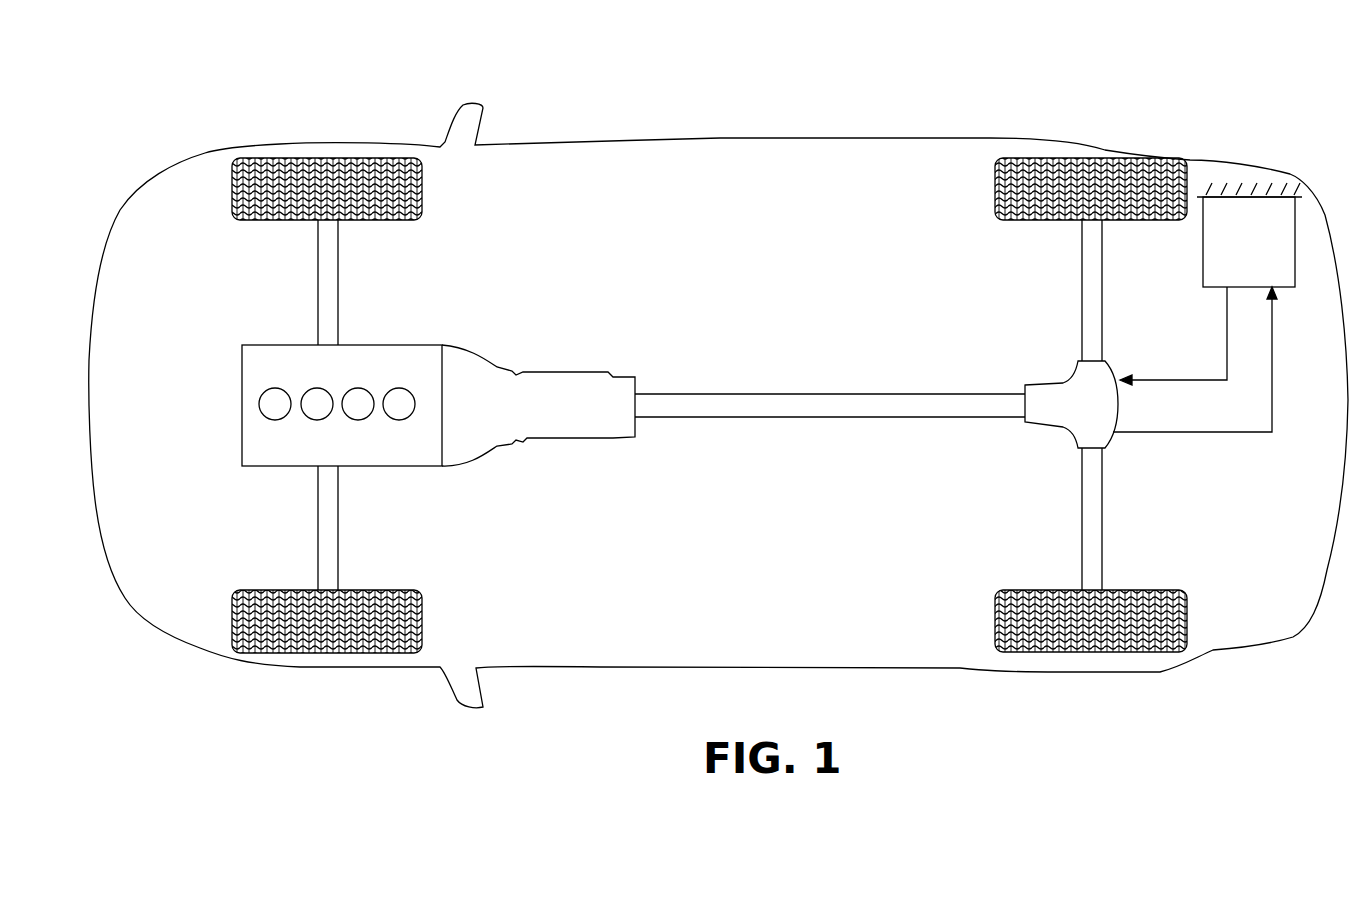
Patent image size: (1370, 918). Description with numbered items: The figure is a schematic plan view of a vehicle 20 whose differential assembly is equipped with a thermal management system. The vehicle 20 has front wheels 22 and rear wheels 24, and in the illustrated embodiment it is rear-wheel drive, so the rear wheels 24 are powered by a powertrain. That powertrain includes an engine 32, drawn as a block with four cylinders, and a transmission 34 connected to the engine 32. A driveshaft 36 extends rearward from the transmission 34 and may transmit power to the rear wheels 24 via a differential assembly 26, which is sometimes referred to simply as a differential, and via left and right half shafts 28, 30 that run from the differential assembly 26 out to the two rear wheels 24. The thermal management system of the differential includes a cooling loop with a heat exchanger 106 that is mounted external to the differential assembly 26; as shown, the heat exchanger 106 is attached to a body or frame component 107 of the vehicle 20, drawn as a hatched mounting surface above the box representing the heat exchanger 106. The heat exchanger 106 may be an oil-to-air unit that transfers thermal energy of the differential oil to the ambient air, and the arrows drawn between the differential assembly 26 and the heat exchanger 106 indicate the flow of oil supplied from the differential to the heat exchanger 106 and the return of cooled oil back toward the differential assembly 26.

The vehicle 20 is at (850, 75).
The front wheels 22 is at (335, 157).
The rear wheels 24 is at (1095, 157).
The differential assembly 26 is at (1062, 380).
The left half shaft 28 is at (1080, 295).
The right half shaft 30 is at (1080, 558).
The engine 32 is at (405, 343).
The transmission 34 is at (565, 371).
The driveshaft 36 is at (903, 392).
The heat exchanger 106 is at (1204, 314).
The body or frame component 107 is at (1257, 187).